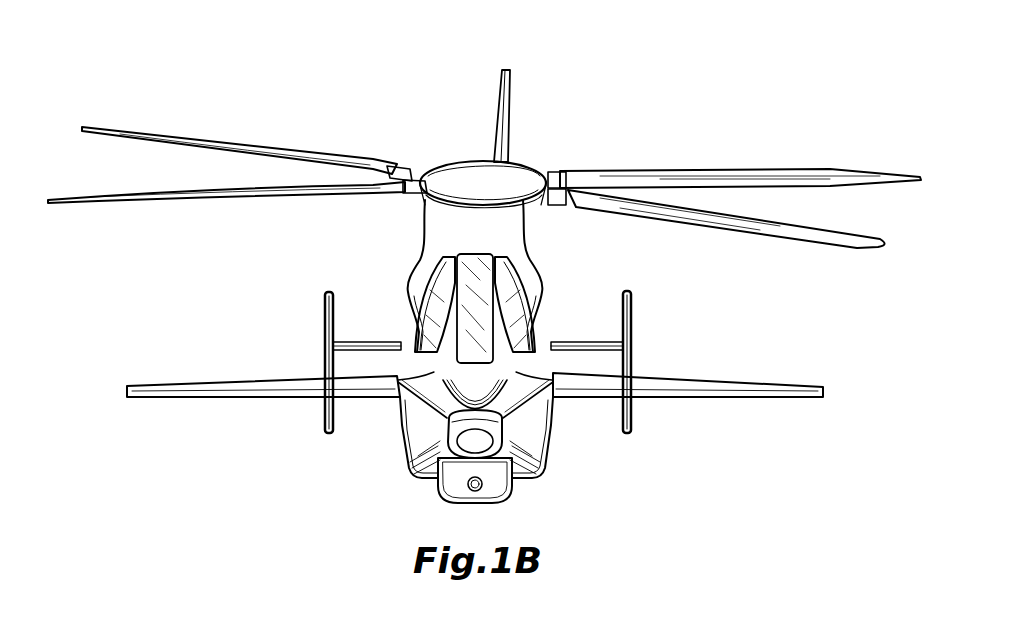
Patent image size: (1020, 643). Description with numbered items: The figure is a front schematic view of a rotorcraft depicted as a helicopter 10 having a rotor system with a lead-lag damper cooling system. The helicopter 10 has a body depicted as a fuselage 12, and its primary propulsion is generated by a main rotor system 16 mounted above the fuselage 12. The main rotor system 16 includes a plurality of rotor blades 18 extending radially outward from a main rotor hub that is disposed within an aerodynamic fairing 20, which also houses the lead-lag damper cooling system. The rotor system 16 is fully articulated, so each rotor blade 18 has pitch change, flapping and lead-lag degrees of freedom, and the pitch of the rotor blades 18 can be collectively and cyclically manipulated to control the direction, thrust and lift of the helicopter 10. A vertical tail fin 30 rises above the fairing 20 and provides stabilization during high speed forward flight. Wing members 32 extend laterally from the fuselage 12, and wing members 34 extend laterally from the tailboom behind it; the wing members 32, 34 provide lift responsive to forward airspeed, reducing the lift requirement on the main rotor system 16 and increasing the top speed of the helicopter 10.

The helicopter 10 is at (580, 102).
The fuselage 12 is at (547, 452).
The main rotor system 16 is at (457, 158).
The rotor blades 18 is at (773, 178).
The aerodynamic fairing 20 is at (523, 160).
The vertical tail fin 30 is at (512, 87).
The wing members 32 is at (272, 393).
The wing members 34 is at (380, 342).